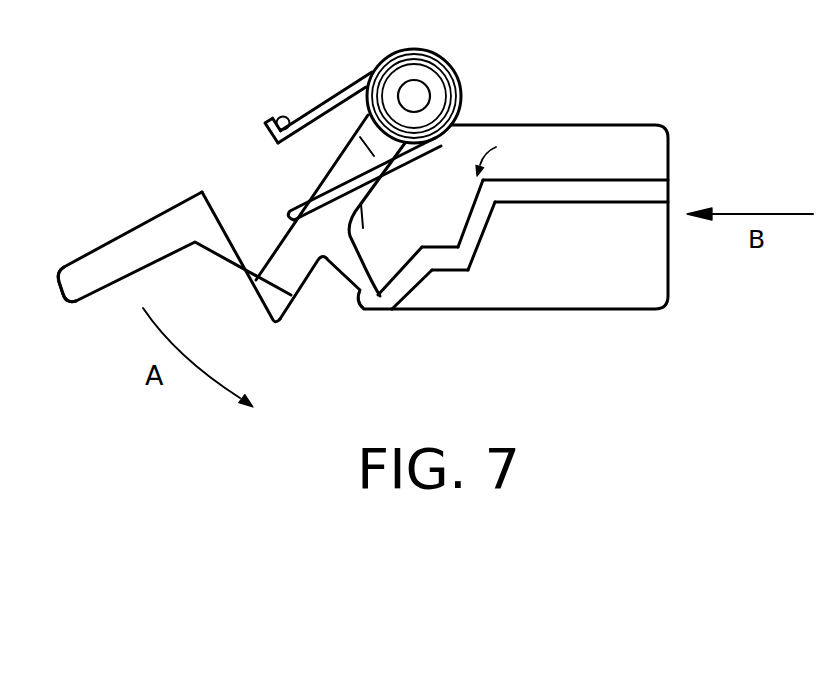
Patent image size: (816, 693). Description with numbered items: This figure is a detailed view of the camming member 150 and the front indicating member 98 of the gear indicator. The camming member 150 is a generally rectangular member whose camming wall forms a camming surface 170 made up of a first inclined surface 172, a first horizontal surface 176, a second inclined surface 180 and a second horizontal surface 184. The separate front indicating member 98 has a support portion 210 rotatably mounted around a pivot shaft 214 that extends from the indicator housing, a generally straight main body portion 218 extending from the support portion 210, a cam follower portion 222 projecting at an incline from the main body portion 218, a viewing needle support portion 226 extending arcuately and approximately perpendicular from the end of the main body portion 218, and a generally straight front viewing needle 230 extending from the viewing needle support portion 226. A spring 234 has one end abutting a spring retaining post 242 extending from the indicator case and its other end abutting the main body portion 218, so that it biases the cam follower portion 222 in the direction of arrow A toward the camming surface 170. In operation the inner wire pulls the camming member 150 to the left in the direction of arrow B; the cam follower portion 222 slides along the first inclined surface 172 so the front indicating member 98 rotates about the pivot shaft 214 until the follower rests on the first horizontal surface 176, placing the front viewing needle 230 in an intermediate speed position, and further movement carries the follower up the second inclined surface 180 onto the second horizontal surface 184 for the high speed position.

The front indicating member 98 is at (213, 249).
The camming member 150 is at (550, 177).
The camming surface 170 is at (504, 153).
The first inclined surface 172 is at (396, 267).
The first horizontal surface 176 is at (428, 245).
The second inclined surface 180 is at (473, 207).
The second horizontal surface 184 is at (583, 178).
The support portion 210 is at (386, 110).
The pivot shaft 214 is at (414, 96).
The main body portion 218 is at (288, 249).
The cam follower portion 222 is at (338, 268).
The viewing needle support portion 226 is at (222, 283).
The front viewing needle 230 is at (97, 248).
The spring 234 is at (347, 88).
The spring retaining post 242 is at (283, 116).